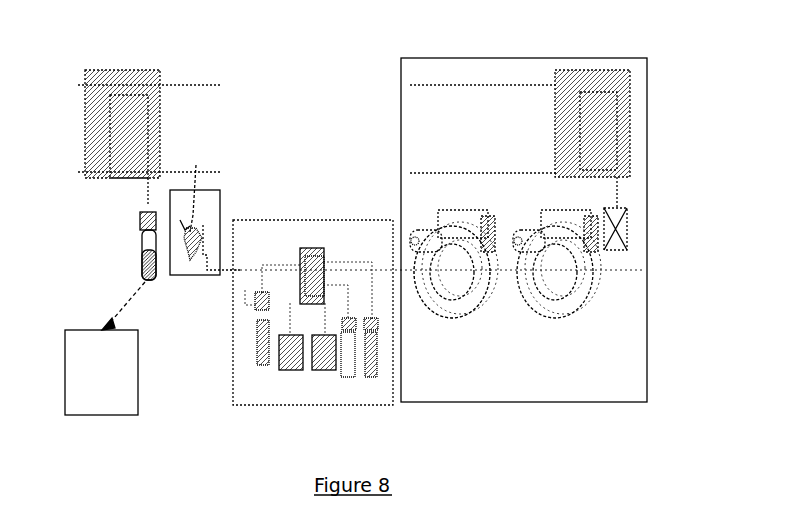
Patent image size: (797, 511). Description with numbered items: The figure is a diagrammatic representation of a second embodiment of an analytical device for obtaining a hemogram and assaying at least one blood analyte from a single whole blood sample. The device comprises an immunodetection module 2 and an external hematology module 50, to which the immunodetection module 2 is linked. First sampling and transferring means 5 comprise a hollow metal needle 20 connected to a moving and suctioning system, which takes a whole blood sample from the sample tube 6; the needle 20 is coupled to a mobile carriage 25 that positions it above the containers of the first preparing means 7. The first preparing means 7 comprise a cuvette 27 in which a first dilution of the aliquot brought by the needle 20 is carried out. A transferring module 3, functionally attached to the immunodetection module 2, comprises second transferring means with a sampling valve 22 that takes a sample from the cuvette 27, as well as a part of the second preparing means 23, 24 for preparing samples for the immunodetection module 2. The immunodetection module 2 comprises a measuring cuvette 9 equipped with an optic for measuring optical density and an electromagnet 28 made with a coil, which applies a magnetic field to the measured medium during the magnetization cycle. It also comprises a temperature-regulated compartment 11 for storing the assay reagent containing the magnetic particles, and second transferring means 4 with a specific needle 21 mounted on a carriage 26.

The immunodetection module 2 is at (593, 403).
The transferring module 3 is at (363, 220).
The second transferring means 4 is at (618, 72).
The first sampling and transferring means 5 is at (96, 75).
The sample tube 6 is at (140, 258).
The first preparing means 7 is at (220, 205).
The measuring cuvette 9 is at (452, 212).
The temperature-regulated compartment 11 is at (627, 230).
The hollow metal needle 20 is at (150, 193).
The specific needle 21 is at (617, 190).
The sampling valve 22 is at (310, 248).
The second preparing means part 23 is at (292, 370).
The second preparing means part 24 is at (324, 372).
The mobile carriage 25 is at (146, 70).
The carriage 26 is at (573, 70).
The cuvette 27 is at (196, 187).
The electromagnet 28 is at (458, 310).
The external hematology module 50 is at (138, 372).